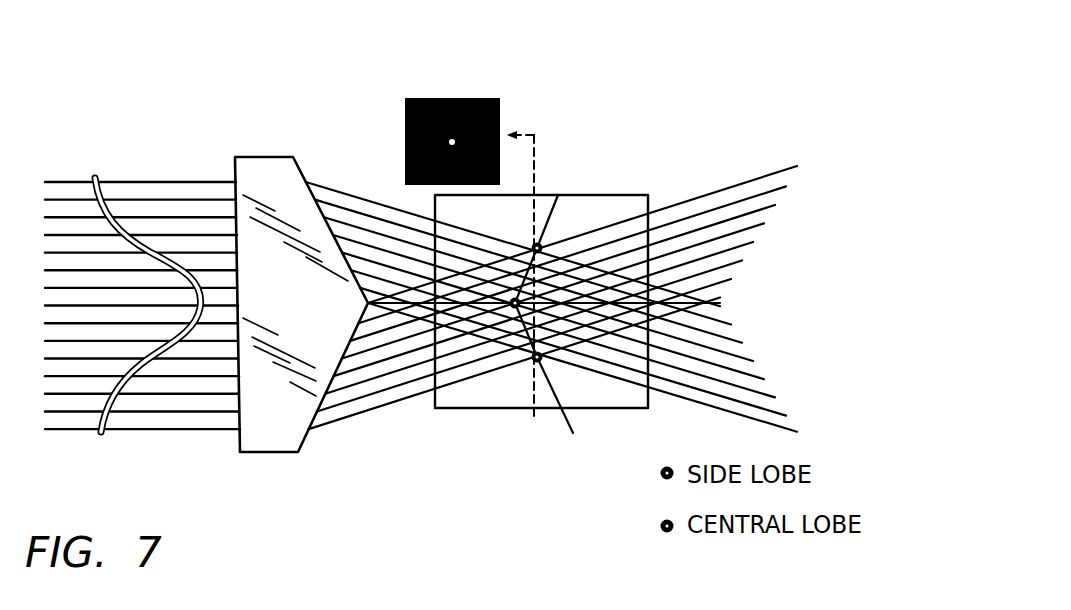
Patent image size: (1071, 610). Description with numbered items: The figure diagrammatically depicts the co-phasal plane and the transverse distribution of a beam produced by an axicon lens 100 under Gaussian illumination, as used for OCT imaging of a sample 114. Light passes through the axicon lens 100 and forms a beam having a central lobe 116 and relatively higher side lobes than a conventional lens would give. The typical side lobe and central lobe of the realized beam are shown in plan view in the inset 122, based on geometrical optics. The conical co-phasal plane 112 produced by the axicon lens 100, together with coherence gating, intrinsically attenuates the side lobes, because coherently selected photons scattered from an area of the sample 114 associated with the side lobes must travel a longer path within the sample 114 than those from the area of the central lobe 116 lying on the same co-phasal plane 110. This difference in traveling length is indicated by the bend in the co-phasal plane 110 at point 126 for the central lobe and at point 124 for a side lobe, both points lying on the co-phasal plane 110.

The axicon lens 100 is at (273, 437).
The co-phasal plane 110 is at (560, 194).
The conical co-phasal plane 112 is at (473, 323).
The sample 114 is at (507, 400).
The central lobe 116 is at (178, 262).
The inset 122 is at (500, 100).
The side lobe point 124 is at (540, 246).
The central lobe point 126 is at (510, 332).